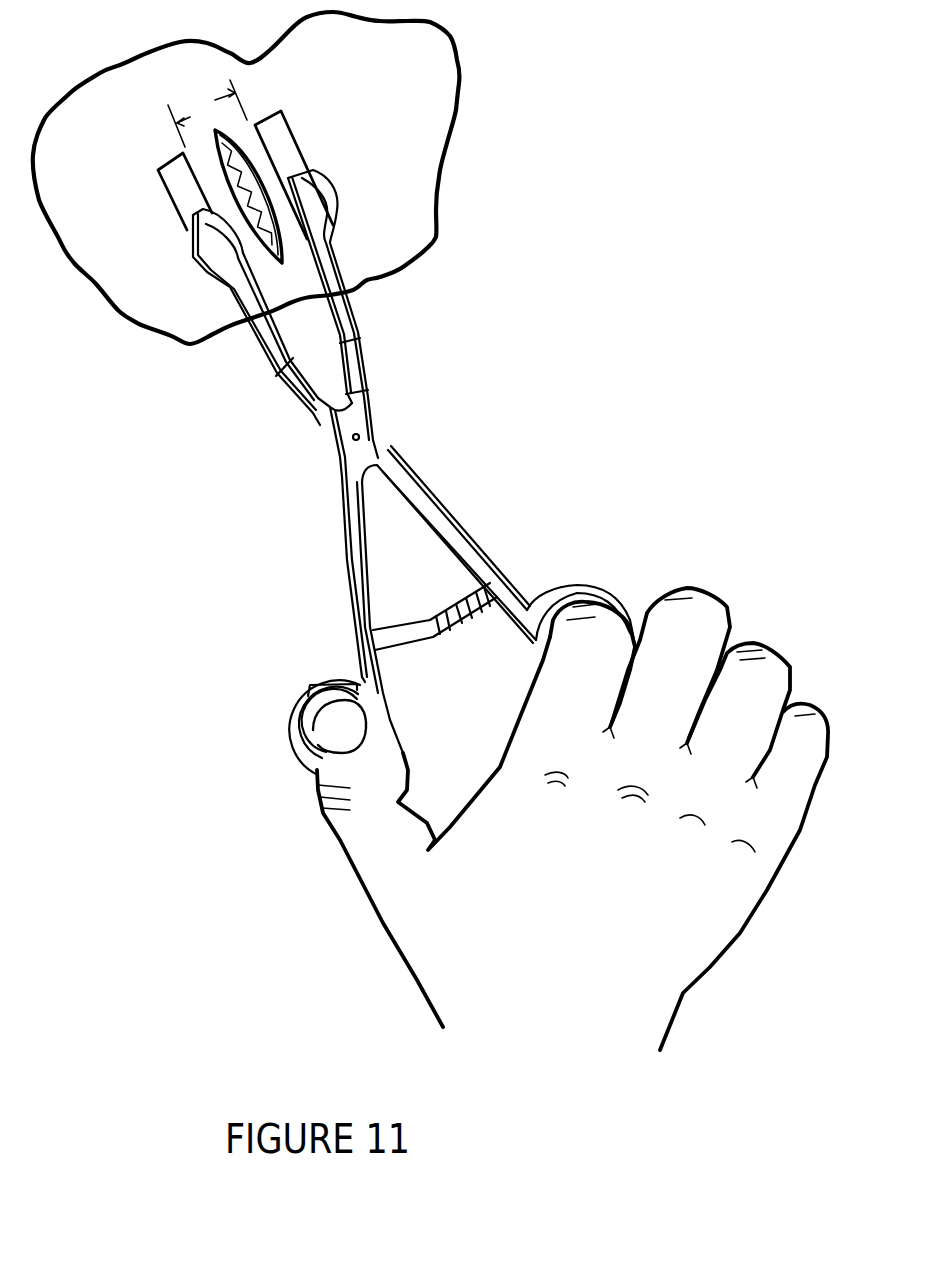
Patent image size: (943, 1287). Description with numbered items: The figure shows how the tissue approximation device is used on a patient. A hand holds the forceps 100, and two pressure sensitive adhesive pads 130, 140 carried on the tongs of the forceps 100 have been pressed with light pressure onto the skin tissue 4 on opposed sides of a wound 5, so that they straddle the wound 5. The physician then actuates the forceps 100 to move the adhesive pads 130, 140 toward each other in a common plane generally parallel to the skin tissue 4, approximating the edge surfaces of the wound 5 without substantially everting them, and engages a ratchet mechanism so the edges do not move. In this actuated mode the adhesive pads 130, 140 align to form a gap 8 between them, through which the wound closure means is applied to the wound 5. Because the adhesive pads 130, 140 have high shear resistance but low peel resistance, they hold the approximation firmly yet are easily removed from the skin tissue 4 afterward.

The skin tissue 4 is at (383, 163).
The wound 5 is at (280, 257).
The gap 8 is at (207, 113).
The forceps 100 is at (354, 416).
The pressure sensitive adhesive pad 130 is at (300, 123).
The pressure sensitive adhesive pad 140 is at (163, 187).